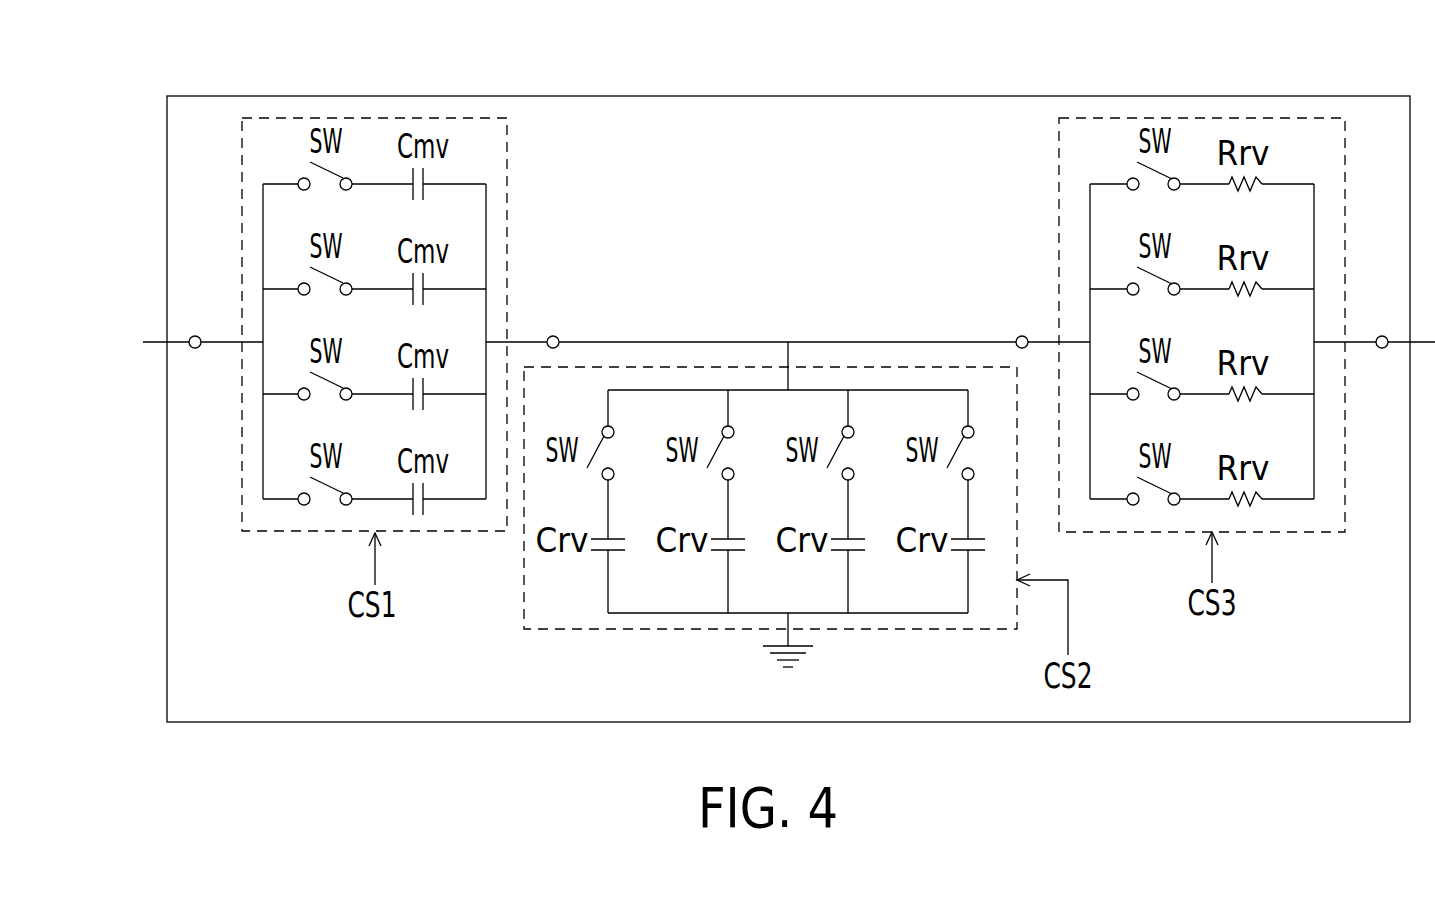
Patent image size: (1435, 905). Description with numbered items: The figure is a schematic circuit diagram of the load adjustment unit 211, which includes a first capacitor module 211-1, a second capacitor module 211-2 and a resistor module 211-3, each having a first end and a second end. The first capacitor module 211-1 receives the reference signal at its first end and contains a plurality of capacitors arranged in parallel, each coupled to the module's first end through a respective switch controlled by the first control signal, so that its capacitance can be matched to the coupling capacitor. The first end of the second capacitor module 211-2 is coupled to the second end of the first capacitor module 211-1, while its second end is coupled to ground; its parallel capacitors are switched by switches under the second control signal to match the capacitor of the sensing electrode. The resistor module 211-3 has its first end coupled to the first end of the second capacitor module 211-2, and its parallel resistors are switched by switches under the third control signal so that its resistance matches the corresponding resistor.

The load adjustment unit 211 is at (790, 95).
The first capacitor module 211-1 is at (376, 117).
The second capacitor module 211-2 is at (582, 629).
The resistor module 211-3 is at (1215, 117).